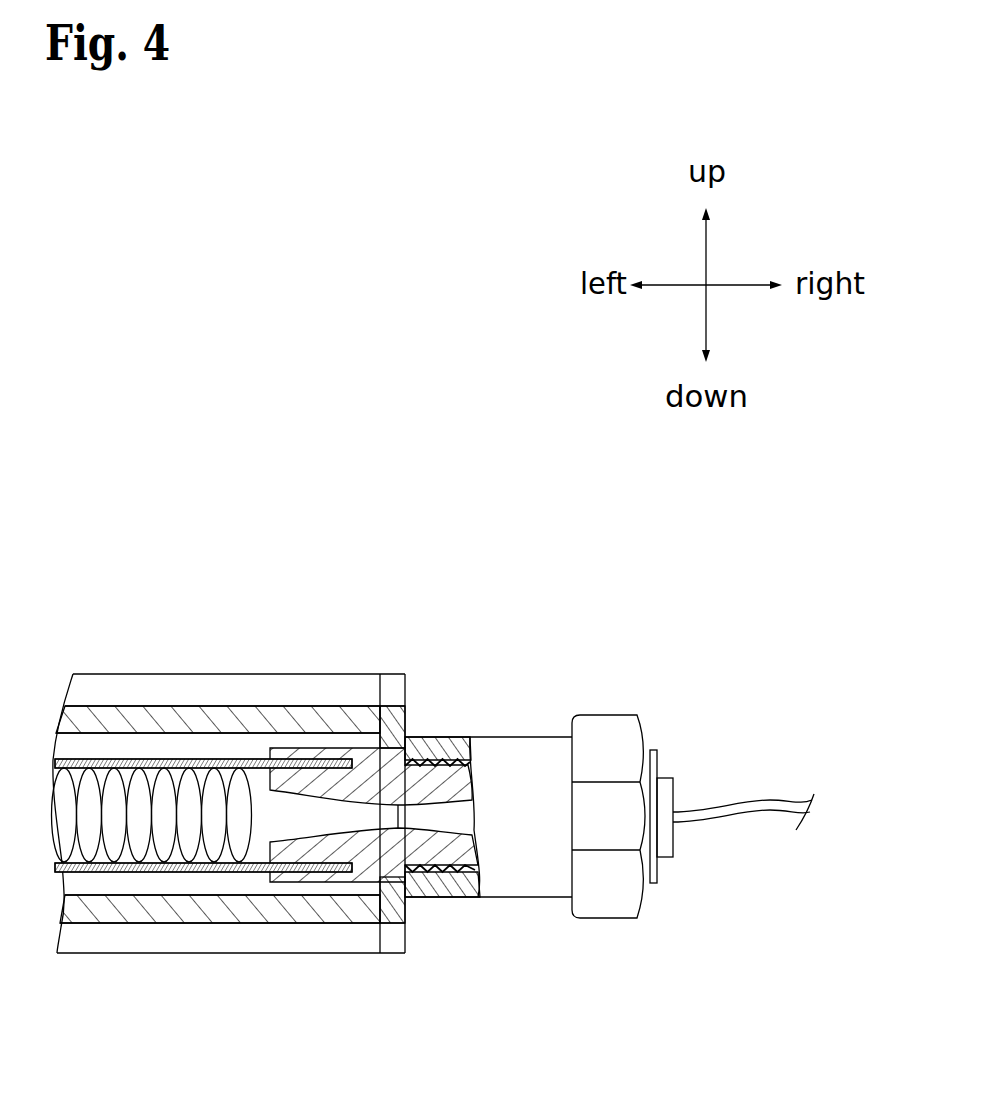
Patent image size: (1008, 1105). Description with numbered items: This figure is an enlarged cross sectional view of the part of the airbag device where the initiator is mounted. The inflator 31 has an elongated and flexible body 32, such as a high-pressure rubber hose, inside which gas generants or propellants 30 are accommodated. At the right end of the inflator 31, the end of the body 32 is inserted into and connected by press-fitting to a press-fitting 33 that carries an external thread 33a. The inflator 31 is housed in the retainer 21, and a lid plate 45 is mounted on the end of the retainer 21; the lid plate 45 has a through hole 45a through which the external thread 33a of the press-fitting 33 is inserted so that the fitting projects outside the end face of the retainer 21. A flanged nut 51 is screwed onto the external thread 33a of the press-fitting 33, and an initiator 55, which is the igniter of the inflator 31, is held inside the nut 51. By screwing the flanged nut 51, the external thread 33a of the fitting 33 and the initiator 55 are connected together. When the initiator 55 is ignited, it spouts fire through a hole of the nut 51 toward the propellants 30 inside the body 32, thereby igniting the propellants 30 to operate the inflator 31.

The retainer 21 is at (545, 678).
The propellants 30 is at (132, 803).
The inflator 31 is at (625, 1048).
The body 32 is at (105, 870).
The press-fitting 33 is at (367, 860).
The external thread 33a is at (447, 900).
The lid plate 45 is at (380, 706).
The through hole 45a is at (425, 750).
The flanged nut 51 is at (622, 900).
The initiator 55 is at (662, 787).